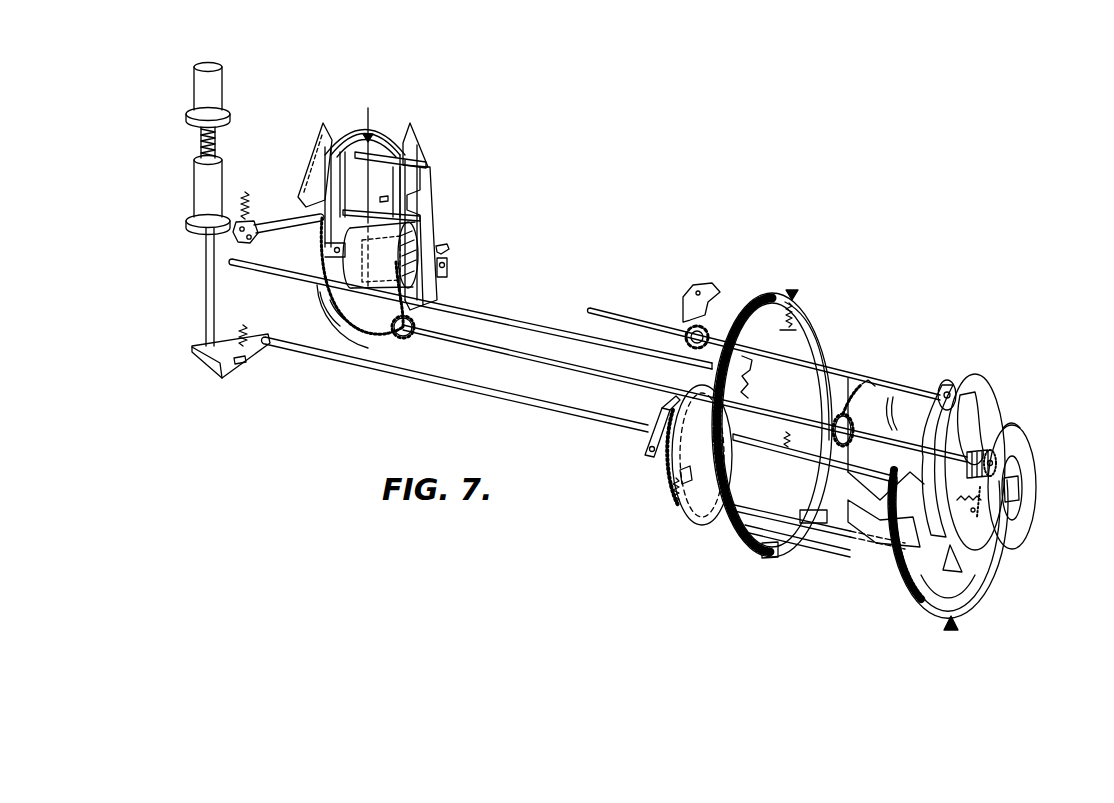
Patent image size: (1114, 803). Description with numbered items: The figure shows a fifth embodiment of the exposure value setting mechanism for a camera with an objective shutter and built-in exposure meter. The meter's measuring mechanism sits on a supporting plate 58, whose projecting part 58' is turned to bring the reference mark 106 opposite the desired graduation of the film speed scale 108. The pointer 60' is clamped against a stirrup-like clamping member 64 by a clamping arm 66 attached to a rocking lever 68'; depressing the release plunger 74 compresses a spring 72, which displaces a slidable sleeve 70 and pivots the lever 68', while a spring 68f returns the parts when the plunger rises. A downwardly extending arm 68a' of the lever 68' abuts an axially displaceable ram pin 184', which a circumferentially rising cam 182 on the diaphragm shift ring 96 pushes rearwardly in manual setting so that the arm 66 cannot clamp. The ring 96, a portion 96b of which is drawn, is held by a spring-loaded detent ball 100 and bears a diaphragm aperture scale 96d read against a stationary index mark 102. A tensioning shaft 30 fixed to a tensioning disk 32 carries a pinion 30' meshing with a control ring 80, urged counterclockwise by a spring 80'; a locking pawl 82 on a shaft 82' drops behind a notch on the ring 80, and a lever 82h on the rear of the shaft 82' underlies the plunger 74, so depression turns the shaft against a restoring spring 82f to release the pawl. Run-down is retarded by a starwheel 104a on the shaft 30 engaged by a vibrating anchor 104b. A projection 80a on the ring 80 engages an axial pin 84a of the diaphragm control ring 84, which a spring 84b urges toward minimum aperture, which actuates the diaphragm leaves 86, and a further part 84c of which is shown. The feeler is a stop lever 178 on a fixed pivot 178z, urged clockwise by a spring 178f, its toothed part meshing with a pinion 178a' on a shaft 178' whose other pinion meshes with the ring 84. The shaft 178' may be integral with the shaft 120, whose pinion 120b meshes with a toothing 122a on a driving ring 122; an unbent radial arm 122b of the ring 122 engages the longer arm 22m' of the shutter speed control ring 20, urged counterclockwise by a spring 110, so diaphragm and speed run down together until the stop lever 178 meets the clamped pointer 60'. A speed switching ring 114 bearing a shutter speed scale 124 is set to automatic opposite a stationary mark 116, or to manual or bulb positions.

The release plunger 74 is at (215, 100).
The spring 72 is at (201, 140).
The slidable sleeve 70 is at (200, 188).
The spring 68f is at (248, 195).
The rocking lever 68' is at (278, 220).
The downwardly extending arm 68a' is at (470, 303).
The ram pin 184' is at (597, 325).
The clamping arm 66 is at (322, 162).
The stirrup-like clamping member 64 is at (393, 140).
The measurement pointer 60' is at (387, 179).
The blade 58' is at (309, 156).
The stop lever 178 is at (416, 227).
The spring 178f is at (440, 252).
The fixed pivot 178z is at (448, 266).
The supporting plate 58 is at (359, 316).
The reference mark 106 is at (342, 306).
The film speed scale 108 is at (322, 314).
The pinion 178a' is at (432, 340).
The shaft 178' is at (685, 393).
The lever 82h is at (228, 365).
The restoring spring 82f is at (243, 326).
The shaft 82' is at (455, 384).
The locking pawl 82 is at (627, 434).
The cam 182 is at (672, 397).
The starwheel 104a is at (696, 326).
The anchor 104b is at (712, 283).
The pinion 30' is at (772, 404).
The detent ball 100 is at (808, 312).
The stationary index mark 102 is at (792, 289).
The diaphragm aperture scale 96d is at (776, 292).
The projection 80a is at (744, 388).
The control ring 80 is at (699, 467).
The spring 80' is at (659, 504).
The pin 84a is at (793, 448).
The spring 84b is at (786, 433).
The bar 84c is at (755, 520).
The diaphragm control ring 84 is at (893, 398).
The tensioning shaft 30 is at (883, 350).
The diaphragm shift ring 96 is at (787, 543).
The tab 96b is at (765, 550).
The diaphragm leaves 86 is at (864, 526).
The shaft 120 is at (940, 383).
The tensioning disk 32 is at (952, 381).
The shutter speed control ring 20 is at (988, 406).
The spring 110 is at (994, 474).
The pinion 120b is at (1005, 452).
The driving ring 122 is at (1016, 530).
The toothing 122a is at (1012, 426).
The shutter speed scale 124 is at (1019, 497).
The radial arm 122b is at (964, 560).
The ring 22m' is at (924, 546).
The speed switching ring 114 is at (970, 598).
The stationary mark 116 is at (951, 632).